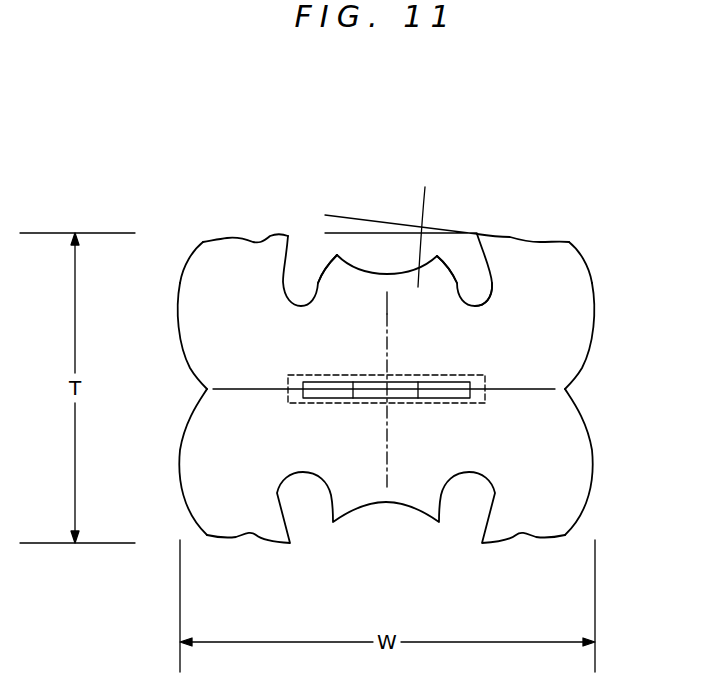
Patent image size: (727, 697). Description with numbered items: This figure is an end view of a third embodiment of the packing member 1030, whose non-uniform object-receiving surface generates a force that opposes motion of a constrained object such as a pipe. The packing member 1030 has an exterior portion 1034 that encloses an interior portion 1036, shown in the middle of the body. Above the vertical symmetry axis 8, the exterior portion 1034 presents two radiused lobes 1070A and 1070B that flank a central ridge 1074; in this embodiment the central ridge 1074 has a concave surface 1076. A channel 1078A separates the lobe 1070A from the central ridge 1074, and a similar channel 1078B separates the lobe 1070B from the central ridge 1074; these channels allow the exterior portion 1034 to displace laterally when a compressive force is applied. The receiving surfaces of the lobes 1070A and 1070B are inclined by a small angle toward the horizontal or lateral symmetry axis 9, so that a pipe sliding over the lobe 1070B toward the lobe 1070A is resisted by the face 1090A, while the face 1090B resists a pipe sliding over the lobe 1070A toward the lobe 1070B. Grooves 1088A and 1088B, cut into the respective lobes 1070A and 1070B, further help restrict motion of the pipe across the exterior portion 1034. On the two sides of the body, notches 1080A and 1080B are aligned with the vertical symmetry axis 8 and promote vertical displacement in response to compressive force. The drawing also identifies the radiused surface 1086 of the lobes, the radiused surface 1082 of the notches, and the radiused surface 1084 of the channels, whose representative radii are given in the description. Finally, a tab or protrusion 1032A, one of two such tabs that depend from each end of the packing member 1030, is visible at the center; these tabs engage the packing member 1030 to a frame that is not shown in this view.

The packing member 1030 is at (371, 153).
The tab 1032A is at (450, 395).
The exterior portion 1034 is at (313, 455).
The interior portion 1036 is at (467, 373).
The radiused lobe 1070A is at (218, 267).
The radiused lobe 1070B is at (557, 276).
The central ridge 1074 is at (425, 225).
The concave surface 1076 is at (355, 266).
The channel 1078A is at (315, 283).
The channel 1078B is at (458, 283).
The notch 1080A is at (187, 398).
The notch 1080B is at (583, 397).
The surface of notch 1082 is at (208, 388).
The surface of channel 1084 is at (483, 303).
The surface of lobe 1086 is at (595, 287).
The groove 1088A is at (250, 237).
The groove 1088B is at (528, 237).
The face 1090A is at (288, 235).
The face 1090B is at (477, 234).
The vertical symmetry axis 8 is at (238, 388).
The horizontal symmetry axis 9 is at (390, 316).